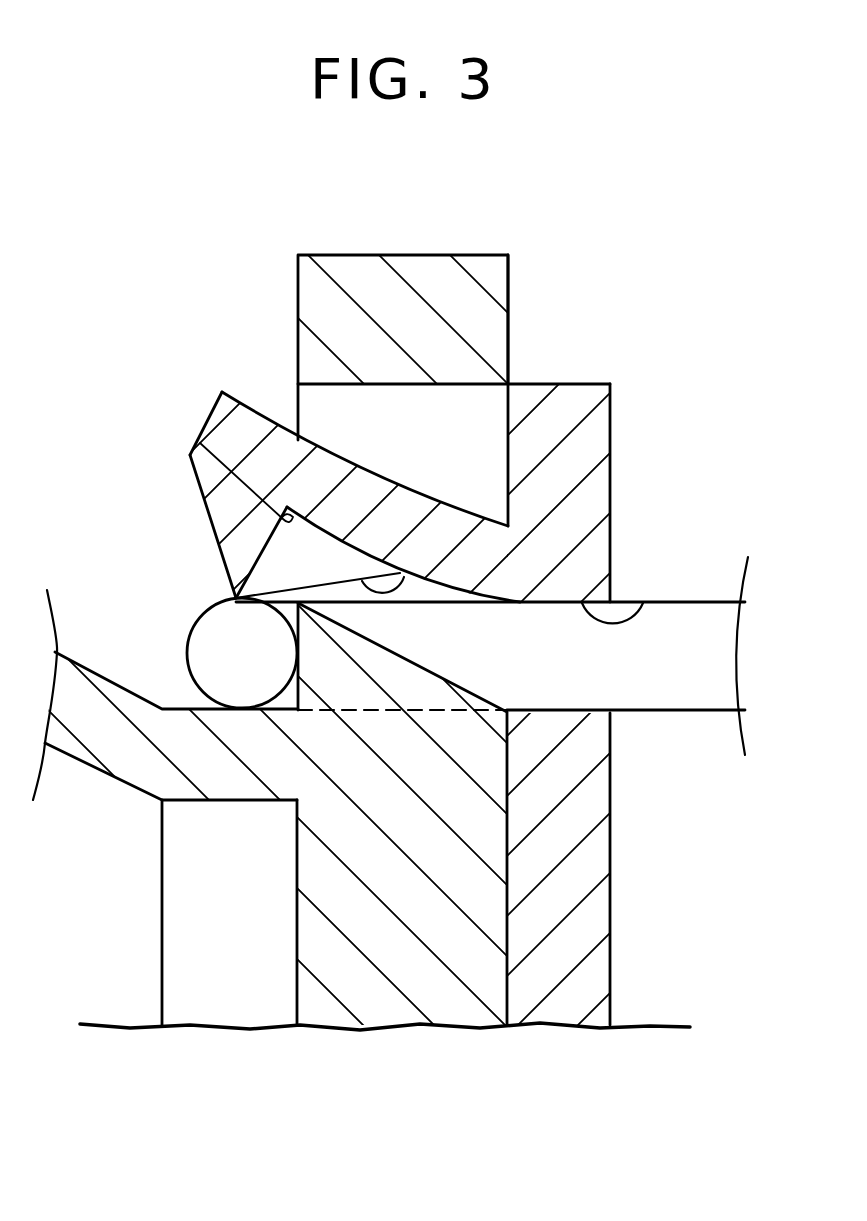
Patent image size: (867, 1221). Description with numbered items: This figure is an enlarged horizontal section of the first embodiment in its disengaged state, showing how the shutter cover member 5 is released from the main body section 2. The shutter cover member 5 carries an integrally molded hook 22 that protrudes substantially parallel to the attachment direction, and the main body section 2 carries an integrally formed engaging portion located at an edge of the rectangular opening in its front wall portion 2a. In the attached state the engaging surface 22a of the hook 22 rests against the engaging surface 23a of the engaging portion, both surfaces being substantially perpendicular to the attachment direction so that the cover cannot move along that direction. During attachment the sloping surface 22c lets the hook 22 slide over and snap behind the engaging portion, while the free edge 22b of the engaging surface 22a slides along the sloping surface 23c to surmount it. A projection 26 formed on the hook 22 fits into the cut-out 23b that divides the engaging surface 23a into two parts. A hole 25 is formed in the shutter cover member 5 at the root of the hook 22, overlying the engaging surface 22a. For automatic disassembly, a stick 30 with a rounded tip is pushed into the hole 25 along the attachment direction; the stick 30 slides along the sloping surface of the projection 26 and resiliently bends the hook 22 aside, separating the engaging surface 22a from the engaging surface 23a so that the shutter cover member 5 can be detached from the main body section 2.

The main body section 2 is at (107, 756).
The front wall portion 2a is at (432, 254).
The shutter cover member 5 is at (592, 844).
The hook 22 is at (255, 410).
The engaging surface of hook 22a is at (200, 442).
The free edge of engaging surface 22b is at (235, 597).
The sloping surface of hook 22c is at (207, 517).
The engaging surface of engaging portion 23a is at (288, 662).
The cut-out 23b is at (445, 705).
The sloping surface of engaging portion 23c is at (405, 652).
The hole 25 is at (643, 606).
The projection 26 is at (316, 545).
The stick 30 is at (205, 655).